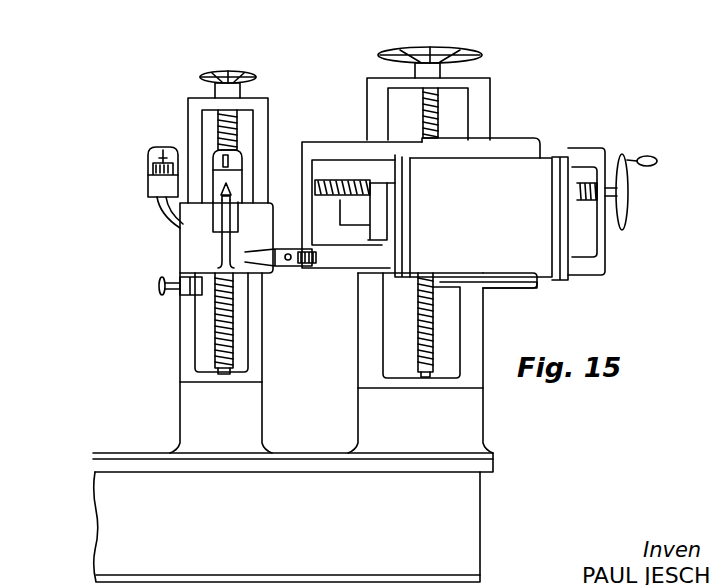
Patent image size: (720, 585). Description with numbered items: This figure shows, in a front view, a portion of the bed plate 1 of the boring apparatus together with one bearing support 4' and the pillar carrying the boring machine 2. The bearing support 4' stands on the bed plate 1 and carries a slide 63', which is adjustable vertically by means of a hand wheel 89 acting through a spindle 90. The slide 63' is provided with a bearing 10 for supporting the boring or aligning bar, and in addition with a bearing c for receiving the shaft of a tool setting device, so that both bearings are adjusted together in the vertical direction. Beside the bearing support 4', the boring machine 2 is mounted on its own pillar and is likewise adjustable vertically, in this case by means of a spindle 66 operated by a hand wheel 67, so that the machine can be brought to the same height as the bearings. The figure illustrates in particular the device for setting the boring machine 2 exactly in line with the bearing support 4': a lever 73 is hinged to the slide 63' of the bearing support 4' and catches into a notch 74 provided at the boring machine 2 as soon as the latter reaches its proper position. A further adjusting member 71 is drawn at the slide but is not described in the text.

The bed plate 1 is at (472, 504).
The boring machine 2 is at (518, 175).
The bearing support 4' is at (231, 363).
The bearing 10 is at (236, 218).
The slide 63' is at (207, 238).
The spindle 66 is at (427, 332).
The hand wheel 67 is at (467, 50).
The adjusting knob 71 is at (175, 296).
The lever 73 is at (290, 267).
The notch 74 is at (313, 266).
The hand wheel 89 is at (242, 74).
The spindle 90 is at (230, 338).
The bearing c is at (152, 185).